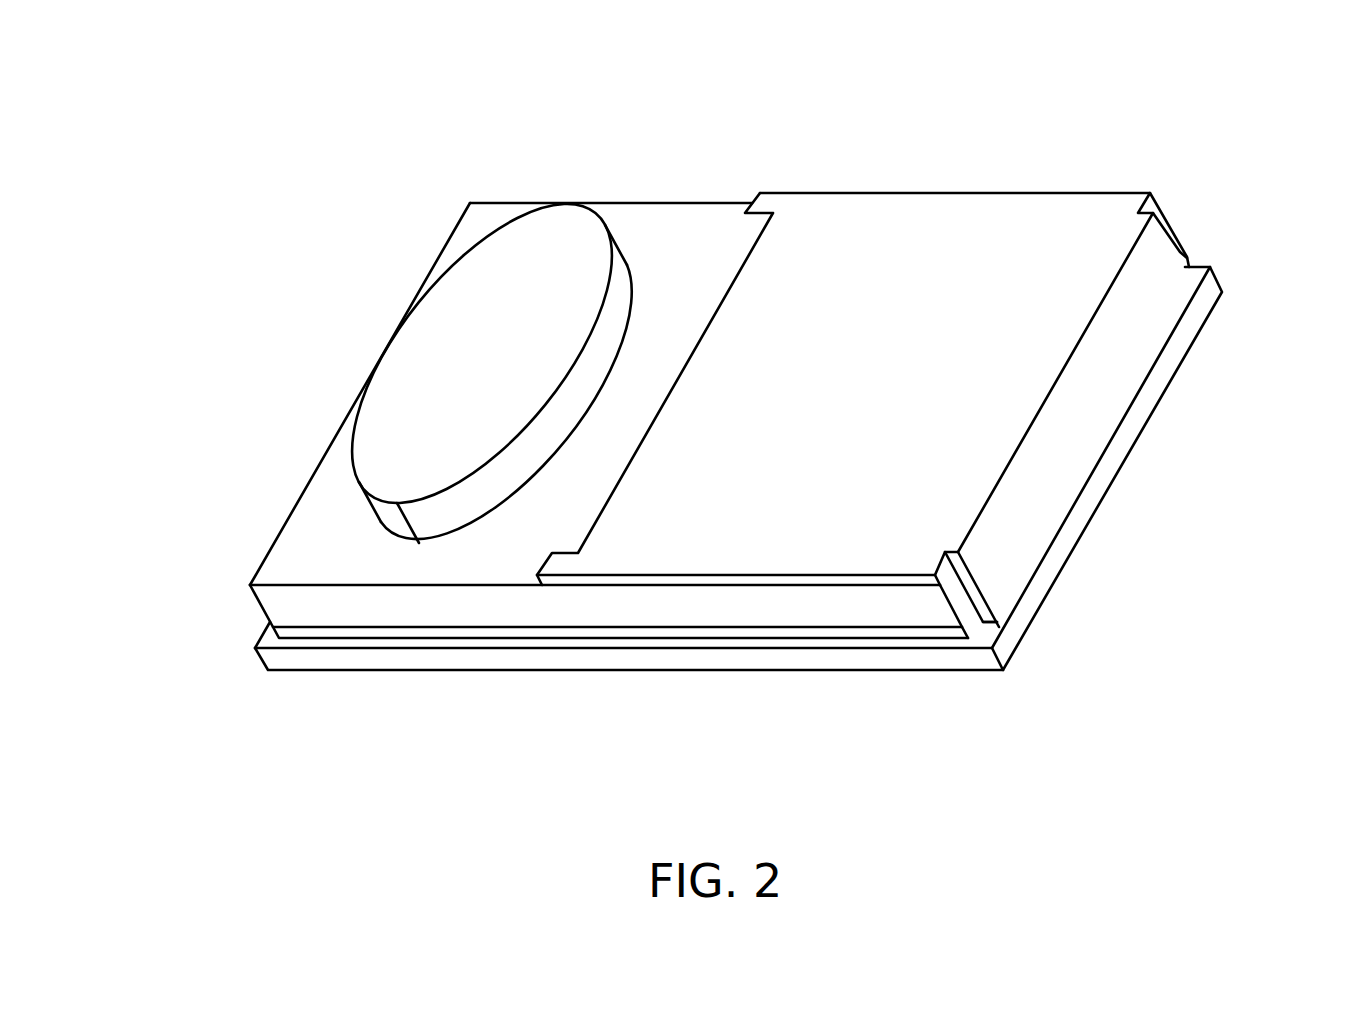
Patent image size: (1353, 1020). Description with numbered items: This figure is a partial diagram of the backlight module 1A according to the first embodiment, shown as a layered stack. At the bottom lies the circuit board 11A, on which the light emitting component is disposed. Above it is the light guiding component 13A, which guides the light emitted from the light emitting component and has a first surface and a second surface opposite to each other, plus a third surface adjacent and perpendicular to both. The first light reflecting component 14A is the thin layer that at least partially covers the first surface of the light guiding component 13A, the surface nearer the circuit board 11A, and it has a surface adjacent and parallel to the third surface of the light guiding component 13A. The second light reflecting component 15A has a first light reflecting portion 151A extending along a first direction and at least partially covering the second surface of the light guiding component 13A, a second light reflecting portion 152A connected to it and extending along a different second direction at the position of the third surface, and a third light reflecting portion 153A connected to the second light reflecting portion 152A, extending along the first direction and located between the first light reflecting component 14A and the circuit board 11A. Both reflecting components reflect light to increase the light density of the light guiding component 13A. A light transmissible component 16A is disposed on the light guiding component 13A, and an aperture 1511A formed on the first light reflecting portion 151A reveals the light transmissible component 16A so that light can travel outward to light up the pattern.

The backlight module 1A is at (240, 108).
The circuit board 11A is at (659, 660).
The light guiding component 13A is at (326, 546).
The first light reflecting component 14A is at (911, 633).
The second light reflecting component 15A is at (1266, 410).
The first light reflecting portion 151A is at (1015, 400).
The aperture 1511A is at (726, 272).
The second light reflecting portion 152A is at (1047, 473).
The third light reflecting portion 153A is at (986, 626).
The light transmissible component 16A is at (405, 343).